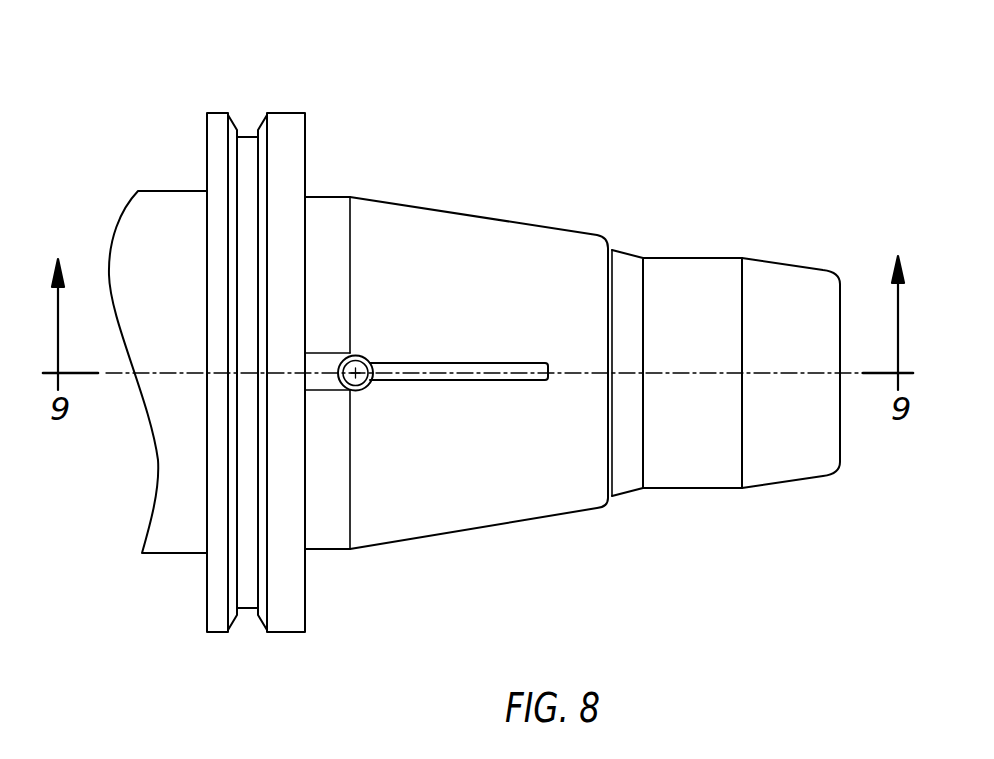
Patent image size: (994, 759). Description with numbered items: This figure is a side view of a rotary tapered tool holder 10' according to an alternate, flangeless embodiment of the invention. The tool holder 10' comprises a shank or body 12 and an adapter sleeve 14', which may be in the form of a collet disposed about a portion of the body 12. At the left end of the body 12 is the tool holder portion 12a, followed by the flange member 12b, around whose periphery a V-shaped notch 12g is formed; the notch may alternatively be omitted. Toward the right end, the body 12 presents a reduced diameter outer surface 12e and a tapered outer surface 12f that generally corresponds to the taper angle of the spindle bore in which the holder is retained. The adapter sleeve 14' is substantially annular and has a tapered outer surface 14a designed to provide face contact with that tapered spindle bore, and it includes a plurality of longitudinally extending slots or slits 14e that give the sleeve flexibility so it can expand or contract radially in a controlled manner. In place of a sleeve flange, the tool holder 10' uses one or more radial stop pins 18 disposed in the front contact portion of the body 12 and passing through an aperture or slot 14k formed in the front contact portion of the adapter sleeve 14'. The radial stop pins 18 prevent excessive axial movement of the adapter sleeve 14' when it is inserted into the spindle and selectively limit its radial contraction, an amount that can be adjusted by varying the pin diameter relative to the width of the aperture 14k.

The tool holder 10' is at (509, 194).
The shank or body 12 is at (747, 335).
The tool holder portion 12a is at (155, 191).
The flange member 12b is at (285, 113).
The reduced diameter outer surface 12e is at (687, 257).
The tapered outer surface 12f is at (807, 268).
The V-shaped notch 12g is at (247, 133).
The adapter sleeve 14' is at (456, 321).
The tapered outer surface 14a is at (475, 212).
The slots or slits 14e is at (467, 380).
The aperture or slot 14k is at (316, 354).
The radial stop pins 18 is at (372, 387).